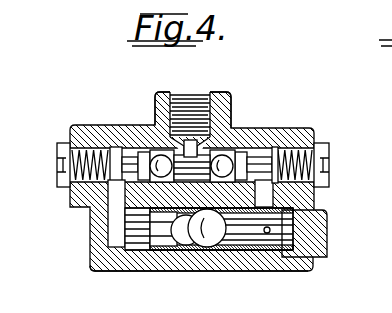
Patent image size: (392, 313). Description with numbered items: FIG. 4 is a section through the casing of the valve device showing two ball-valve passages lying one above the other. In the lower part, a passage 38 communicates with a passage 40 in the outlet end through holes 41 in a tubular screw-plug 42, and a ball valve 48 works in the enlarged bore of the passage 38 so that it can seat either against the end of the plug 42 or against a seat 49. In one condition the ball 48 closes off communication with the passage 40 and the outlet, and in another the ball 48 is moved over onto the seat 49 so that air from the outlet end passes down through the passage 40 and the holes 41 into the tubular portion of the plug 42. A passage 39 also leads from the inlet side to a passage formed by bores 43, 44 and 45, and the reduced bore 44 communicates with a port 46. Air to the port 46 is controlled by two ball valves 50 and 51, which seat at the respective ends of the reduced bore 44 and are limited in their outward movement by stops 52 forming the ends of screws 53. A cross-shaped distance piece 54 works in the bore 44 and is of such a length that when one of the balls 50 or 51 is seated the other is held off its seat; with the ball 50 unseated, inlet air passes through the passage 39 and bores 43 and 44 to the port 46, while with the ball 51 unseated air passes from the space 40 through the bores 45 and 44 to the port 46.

The passage 38 is at (165, 250).
The passage 39 is at (118, 217).
The passage 40 is at (274, 193).
The holes 41 is at (272, 222).
The screw-plug 42 is at (328, 217).
The bore 43 is at (145, 140).
The reduced bore 44 is at (232, 126).
The bore 45 is at (247, 128).
The port 46 is at (196, 89).
The ball valve 48 is at (216, 274).
The seat 49 is at (150, 250).
The ball valve 50 is at (145, 127).
The ball valve 51 is at (241, 127).
The stops 52 is at (113, 125).
The screws 53 is at (57, 152).
The cross-shaped distance piece 54 is at (164, 92).